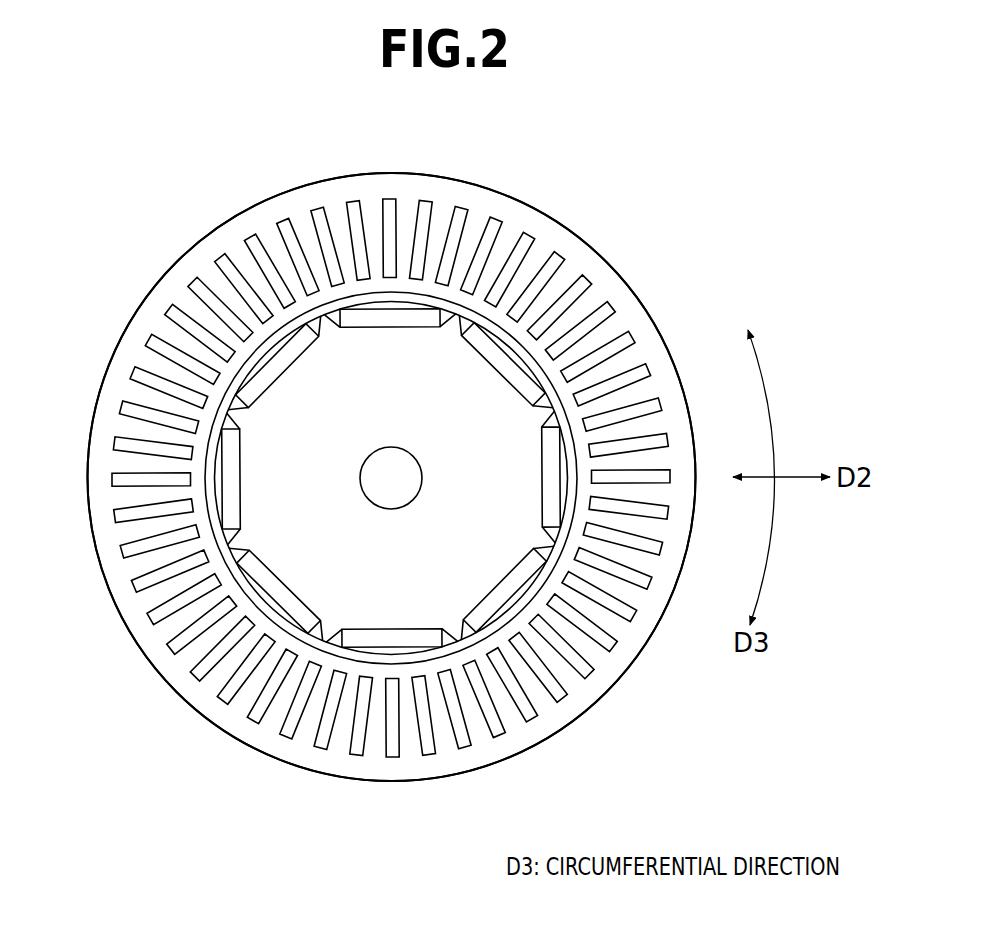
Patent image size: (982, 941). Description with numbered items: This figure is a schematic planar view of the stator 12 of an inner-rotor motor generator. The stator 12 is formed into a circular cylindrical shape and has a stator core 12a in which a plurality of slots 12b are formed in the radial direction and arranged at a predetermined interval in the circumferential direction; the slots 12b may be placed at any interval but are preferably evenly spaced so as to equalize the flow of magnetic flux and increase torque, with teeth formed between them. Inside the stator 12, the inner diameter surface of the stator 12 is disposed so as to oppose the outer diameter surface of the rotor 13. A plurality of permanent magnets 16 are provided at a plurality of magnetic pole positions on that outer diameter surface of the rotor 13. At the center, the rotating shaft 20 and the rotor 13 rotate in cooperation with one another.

The stator 12 is at (379, 439).
The stator core 12a is at (262, 228).
The slots 12b is at (408, 248).
The rotor 13 is at (432, 418).
The permanent magnets 16 is at (395, 320).
The rotating shaft 20 is at (395, 490).